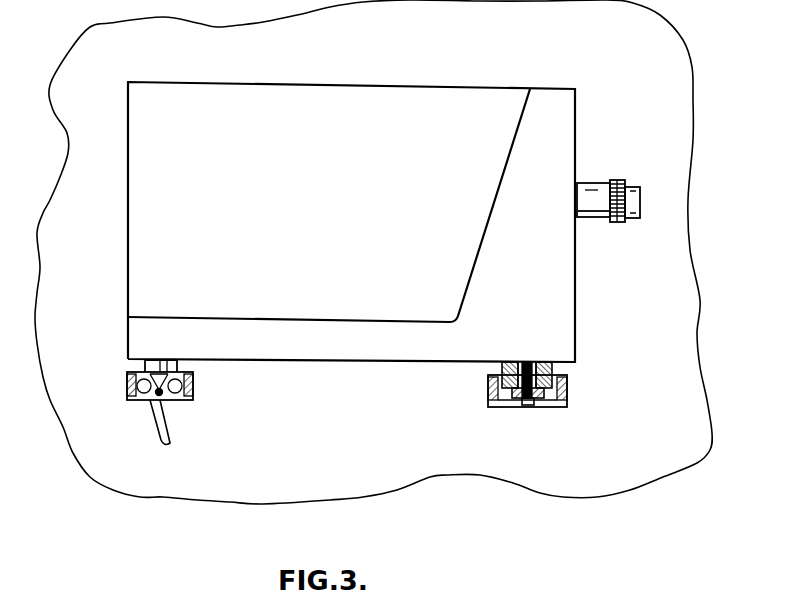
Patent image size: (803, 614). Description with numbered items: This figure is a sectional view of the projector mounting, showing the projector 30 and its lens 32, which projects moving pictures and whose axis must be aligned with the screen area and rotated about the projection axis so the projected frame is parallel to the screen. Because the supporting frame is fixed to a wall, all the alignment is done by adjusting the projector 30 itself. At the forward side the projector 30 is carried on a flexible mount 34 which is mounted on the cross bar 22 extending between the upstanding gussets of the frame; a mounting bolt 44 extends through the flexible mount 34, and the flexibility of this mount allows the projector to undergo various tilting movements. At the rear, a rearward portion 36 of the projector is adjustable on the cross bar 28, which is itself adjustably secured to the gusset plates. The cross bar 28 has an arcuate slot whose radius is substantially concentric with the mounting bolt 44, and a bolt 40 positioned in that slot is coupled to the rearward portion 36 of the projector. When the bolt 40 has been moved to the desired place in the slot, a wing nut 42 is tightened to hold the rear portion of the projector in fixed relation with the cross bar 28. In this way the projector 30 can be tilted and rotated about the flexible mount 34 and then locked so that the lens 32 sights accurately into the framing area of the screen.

The projector 30 is at (313, 222).
The lens 32 is at (641, 192).
The rearward portion of the projector 36 is at (157, 356).
The cross bar 28 is at (196, 386).
The bolt 40 is at (129, 372).
The wing nut 42 is at (143, 399).
The cross bar 22 is at (567, 390).
The mounting bolt 44 is at (528, 372).
The flexible mount 34 is at (553, 390).